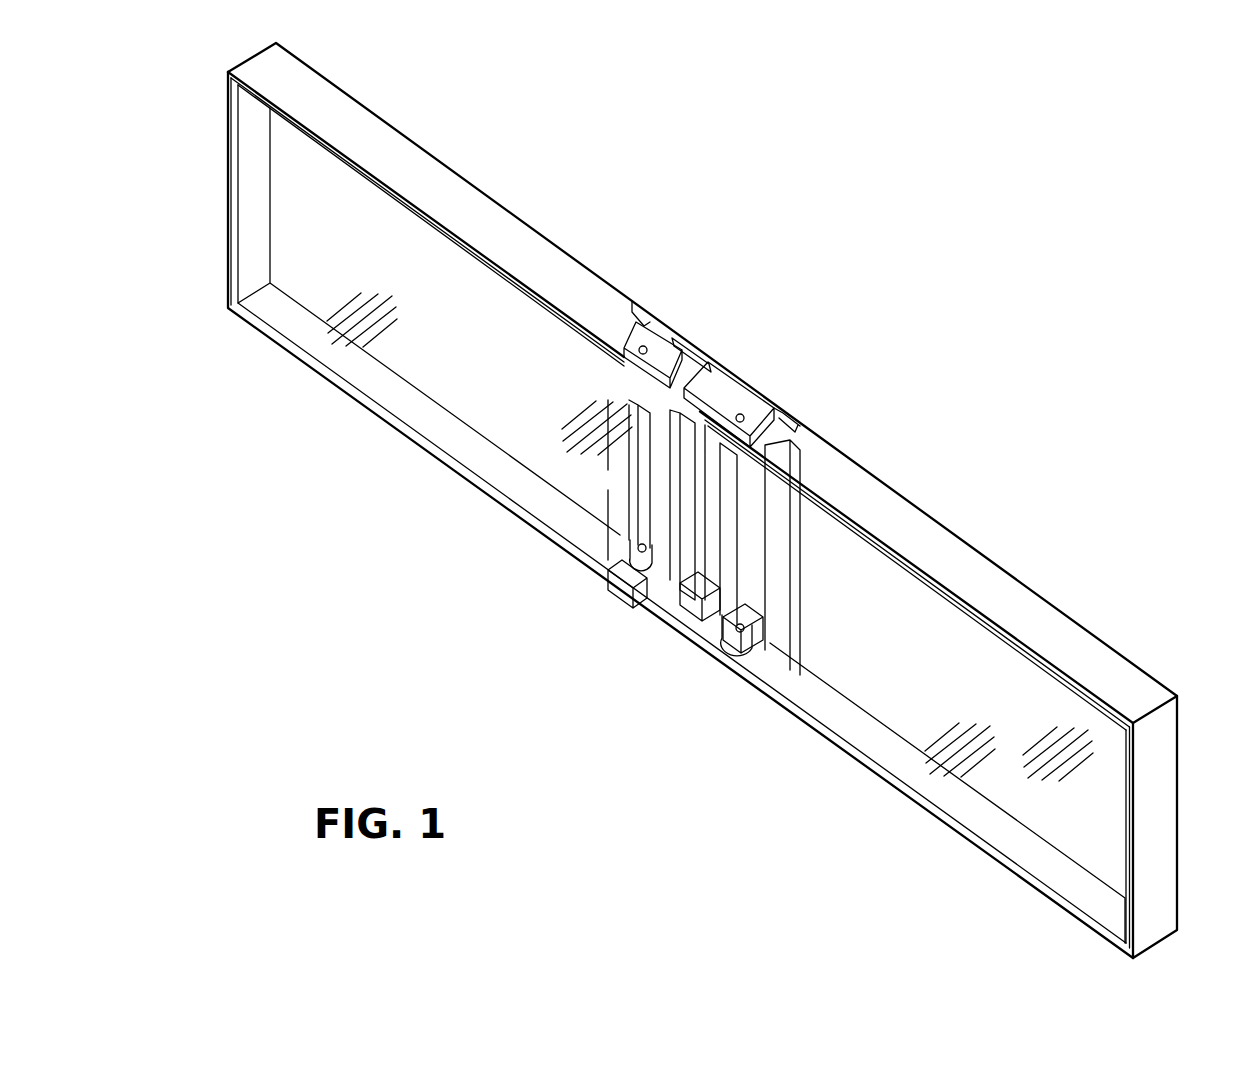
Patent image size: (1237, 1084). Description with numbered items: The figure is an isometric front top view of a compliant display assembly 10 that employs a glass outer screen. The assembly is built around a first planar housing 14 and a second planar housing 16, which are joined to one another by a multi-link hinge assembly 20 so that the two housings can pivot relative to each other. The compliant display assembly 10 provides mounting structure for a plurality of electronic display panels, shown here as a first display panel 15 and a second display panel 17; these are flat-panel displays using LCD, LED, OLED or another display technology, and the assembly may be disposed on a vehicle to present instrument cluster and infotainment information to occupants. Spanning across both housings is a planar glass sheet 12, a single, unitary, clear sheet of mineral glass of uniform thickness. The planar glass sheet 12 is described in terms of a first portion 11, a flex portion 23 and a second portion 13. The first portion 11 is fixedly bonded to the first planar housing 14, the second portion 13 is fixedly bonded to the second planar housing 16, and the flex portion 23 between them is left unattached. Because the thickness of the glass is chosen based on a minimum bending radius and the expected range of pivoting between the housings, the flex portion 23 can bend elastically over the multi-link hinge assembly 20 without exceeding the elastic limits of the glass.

The compliant display assembly 10 is at (947, 312).
The first portion 11 is at (600, 312).
The planar glass sheet 12 is at (493, 468).
The second portion 13 is at (888, 572).
The first planar housing 14 is at (468, 185).
The first display panel 15 is at (541, 233).
The second planar housing 16 is at (995, 580).
The second display panel 17 is at (1095, 632).
The multi-link hinge assembly 20 is at (722, 345).
The flex portion 23 is at (678, 630).